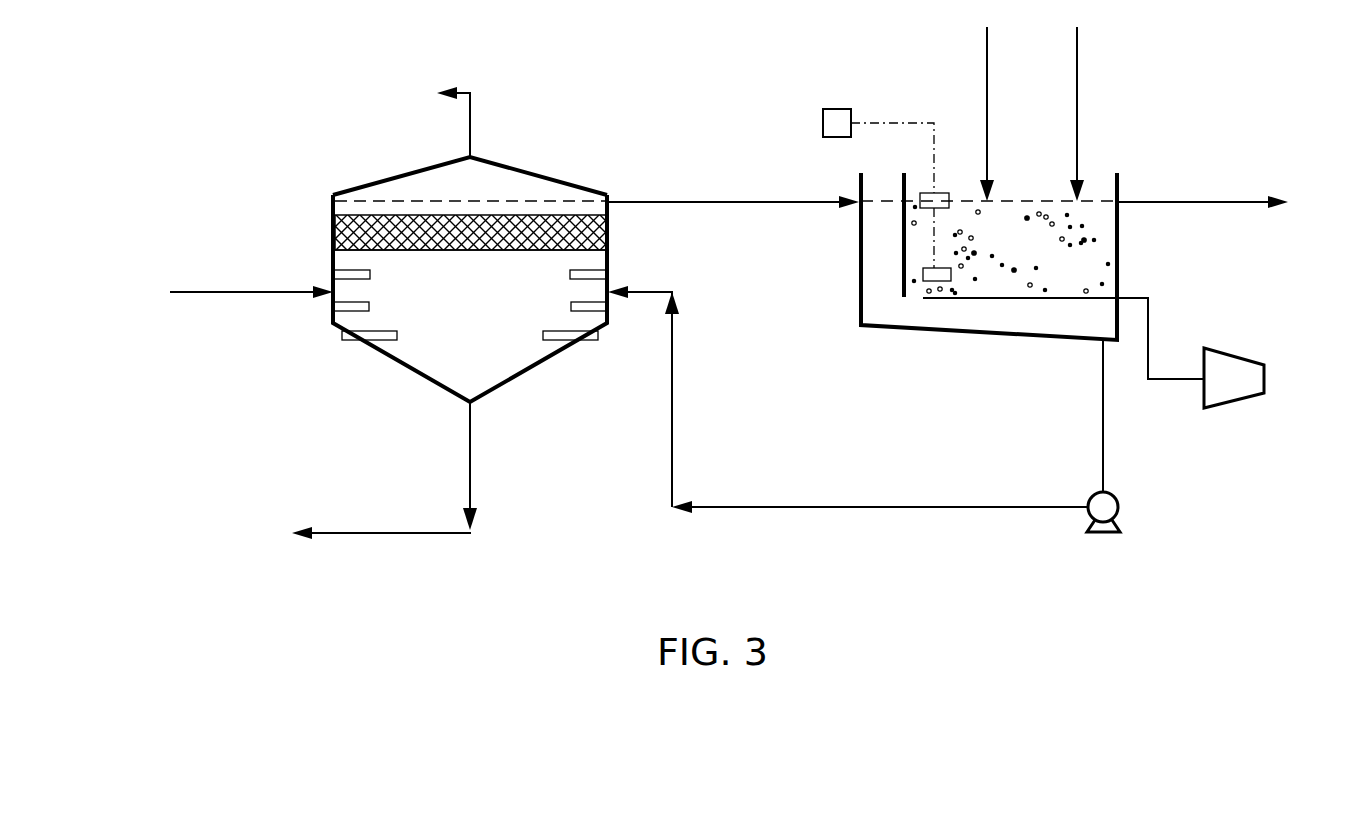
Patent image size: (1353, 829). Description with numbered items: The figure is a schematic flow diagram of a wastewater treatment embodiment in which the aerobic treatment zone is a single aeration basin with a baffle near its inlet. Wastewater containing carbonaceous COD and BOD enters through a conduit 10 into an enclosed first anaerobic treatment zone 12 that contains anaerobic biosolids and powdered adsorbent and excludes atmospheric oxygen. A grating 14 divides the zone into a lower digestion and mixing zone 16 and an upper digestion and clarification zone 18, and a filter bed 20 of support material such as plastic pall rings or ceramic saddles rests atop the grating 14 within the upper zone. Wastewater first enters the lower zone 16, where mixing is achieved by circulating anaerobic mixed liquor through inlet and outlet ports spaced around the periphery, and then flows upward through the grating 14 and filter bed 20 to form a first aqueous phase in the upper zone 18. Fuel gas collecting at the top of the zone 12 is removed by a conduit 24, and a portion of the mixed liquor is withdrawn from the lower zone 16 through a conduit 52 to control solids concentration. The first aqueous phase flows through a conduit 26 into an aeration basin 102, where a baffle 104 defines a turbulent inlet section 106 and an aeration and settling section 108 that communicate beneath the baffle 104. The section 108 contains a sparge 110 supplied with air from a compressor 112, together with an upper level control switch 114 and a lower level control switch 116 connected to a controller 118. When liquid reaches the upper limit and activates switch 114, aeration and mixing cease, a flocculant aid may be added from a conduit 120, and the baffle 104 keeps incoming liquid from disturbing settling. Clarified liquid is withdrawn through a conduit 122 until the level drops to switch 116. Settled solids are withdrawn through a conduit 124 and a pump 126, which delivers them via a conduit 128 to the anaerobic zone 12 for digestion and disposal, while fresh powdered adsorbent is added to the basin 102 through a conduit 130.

The conduit 10 is at (268, 290).
The first anaerobic treatment zone 12 is at (393, 178).
The grating 14 is at (607, 252).
The lower digestion and mixing zone 16 is at (489, 311).
The upper digestion and clarification zone 18 is at (489, 207).
The filter bed 20 is at (607, 222).
The conduit 24 is at (470, 121).
The conduit 26 is at (755, 200).
The conduit 52 is at (472, 468).
The aeration basin 102 is at (861, 291).
The baffle 104 is at (903, 185).
The turbulent inlet section 106 is at (885, 249).
The aeration and settling section 108 is at (1048, 262).
The sparge 110 is at (1002, 298).
The compressor 112 is at (1228, 353).
The upper level control switch 114 is at (936, 193).
The lower level control switch 116 is at (923, 283).
The controller 118 is at (841, 109).
The conduit 120 is at (987, 47).
The conduit 122 is at (1217, 201).
The conduit 124 is at (1103, 458).
The pump 126 is at (1094, 496).
The conduit 128 is at (672, 428).
The conduit 130 is at (1077, 57).